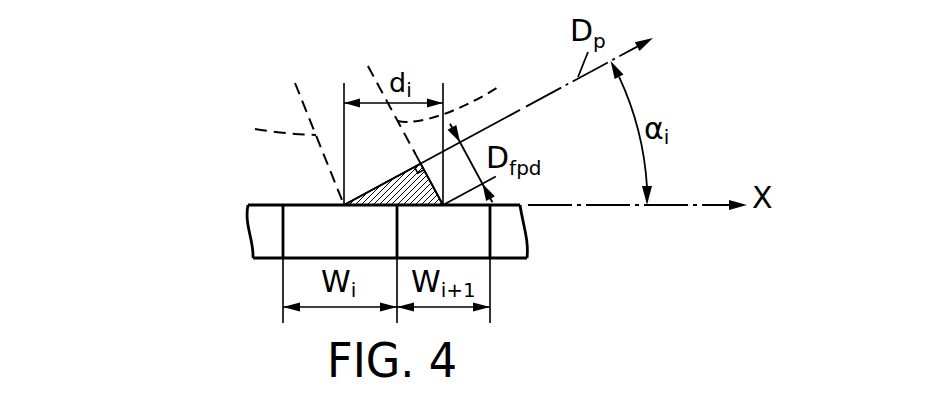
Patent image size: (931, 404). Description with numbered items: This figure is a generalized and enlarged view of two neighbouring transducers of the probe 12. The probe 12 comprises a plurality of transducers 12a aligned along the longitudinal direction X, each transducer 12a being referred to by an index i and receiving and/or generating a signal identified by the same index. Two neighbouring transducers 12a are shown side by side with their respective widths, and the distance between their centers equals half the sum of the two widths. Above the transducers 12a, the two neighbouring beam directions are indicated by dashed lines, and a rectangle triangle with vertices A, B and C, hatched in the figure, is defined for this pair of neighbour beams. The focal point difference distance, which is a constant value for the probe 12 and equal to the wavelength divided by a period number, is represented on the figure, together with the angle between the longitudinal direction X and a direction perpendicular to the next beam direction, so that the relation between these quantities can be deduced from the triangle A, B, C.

The probe 12 is at (149, 142).
The transducer 12a is at (308, 260).
The vertex A of the rectangle triangle A is at (325, 144).
The vertex B of the rectangle triangle B is at (429, 165).
The vertex C of the rectangle triangle C is at (469, 144).